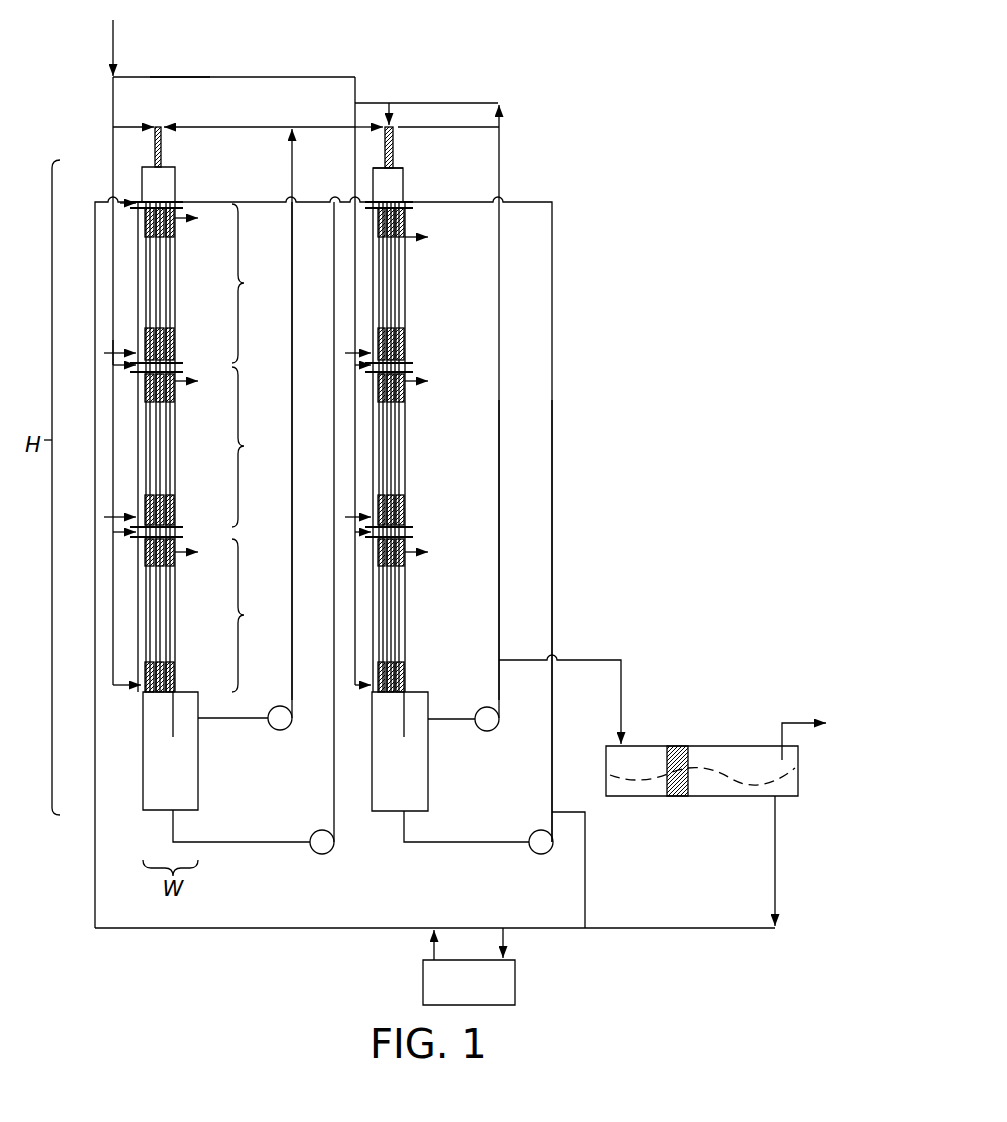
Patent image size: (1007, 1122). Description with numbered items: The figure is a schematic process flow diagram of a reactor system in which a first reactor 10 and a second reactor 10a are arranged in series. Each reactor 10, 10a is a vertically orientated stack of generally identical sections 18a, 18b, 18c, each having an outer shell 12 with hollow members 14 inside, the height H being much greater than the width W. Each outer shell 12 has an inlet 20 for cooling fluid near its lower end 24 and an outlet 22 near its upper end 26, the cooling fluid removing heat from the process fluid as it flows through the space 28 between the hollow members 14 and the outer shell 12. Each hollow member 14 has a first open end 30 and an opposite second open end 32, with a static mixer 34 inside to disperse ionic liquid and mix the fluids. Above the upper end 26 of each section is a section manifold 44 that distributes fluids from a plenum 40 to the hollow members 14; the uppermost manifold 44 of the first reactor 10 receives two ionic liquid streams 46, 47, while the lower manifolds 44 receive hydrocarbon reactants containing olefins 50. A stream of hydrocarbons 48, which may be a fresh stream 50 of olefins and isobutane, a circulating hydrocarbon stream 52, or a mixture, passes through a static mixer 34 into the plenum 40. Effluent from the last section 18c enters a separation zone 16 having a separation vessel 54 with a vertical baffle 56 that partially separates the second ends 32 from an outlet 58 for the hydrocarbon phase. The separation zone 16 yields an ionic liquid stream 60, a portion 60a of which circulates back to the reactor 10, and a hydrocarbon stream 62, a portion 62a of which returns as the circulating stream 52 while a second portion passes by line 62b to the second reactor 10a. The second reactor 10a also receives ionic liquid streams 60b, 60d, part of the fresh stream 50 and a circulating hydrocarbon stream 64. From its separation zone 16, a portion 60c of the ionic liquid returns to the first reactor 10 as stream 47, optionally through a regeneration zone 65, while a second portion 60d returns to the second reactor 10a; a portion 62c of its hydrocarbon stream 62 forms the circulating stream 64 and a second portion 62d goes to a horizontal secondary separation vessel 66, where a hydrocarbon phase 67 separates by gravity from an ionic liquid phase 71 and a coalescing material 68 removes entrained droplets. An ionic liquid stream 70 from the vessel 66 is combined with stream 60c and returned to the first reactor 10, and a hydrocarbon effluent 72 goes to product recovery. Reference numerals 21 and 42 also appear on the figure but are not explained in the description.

The reactor 10 is at (271, 390).
The second reactor 10a is at (421, 176).
The outer shell 12 is at (175, 283).
The hollow member 14 is at (168, 257).
The separation zone 16 is at (332, 754).
The section 18a is at (452, 285).
The section 18b is at (445, 412).
The section 18c is at (445, 587).
The inlet for cooling fluid 20 is at (116, 350).
The connector 21 is at (175, 356).
The outlet for cooling fluid 22 is at (186, 224).
The lower end 24 is at (138, 683).
The upper end 26 is at (140, 217).
The space 28 is at (143, 277).
The first open end 30 is at (405, 222).
The second open end 32 is at (405, 352).
The static mixer 34 is at (170, 142).
The plenum 40 is at (168, 170).
The conduit 42 is at (398, 200).
The section manifold 44 is at (176, 204).
The ionic liquid stream 46 is at (270, 200).
The ionic liquid stream 47 is at (98, 200).
The stream of hydrocarbons 48 is at (158, 125).
The fresh stream 50 is at (114, 60).
The circulating hydrocarbon stream 52 is at (197, 126).
The separation vessel 54 is at (200, 805).
The vertical baffle 56 is at (175, 706).
The outlet for a hydrocarbon phase 58 is at (200, 726).
The ionic liquid stream 60 is at (240, 845).
The portion of ionic liquid stream 60a is at (315, 200).
The ionic liquid stream 60b is at (337, 212).
The portion of ionic liquid stream 60c is at (586, 866).
The second portion of ionic liquid stream 60d is at (553, 760).
The hydrocarbon stream 62 is at (265, 728).
The portion of hydrocarbon stream 62a is at (245, 125).
The line 62b is at (312, 126).
The portion of hydrocarbon stream 62c is at (498, 620).
The second portion of hydrocarbon stream 62d is at (527, 658).
The circulating hydrocarbon stream 64 is at (475, 100).
The regeneration zone 65 is at (516, 980).
The secondary separation vessel 66 is at (721, 801).
The hydrocarbon phase 67 is at (786, 760).
The coalescing material 68 is at (673, 745).
The ionic liquid stream 70 is at (778, 862).
The ionic liquid phase 71 is at (795, 779).
The hydrocarbon effluent 72 is at (805, 720).